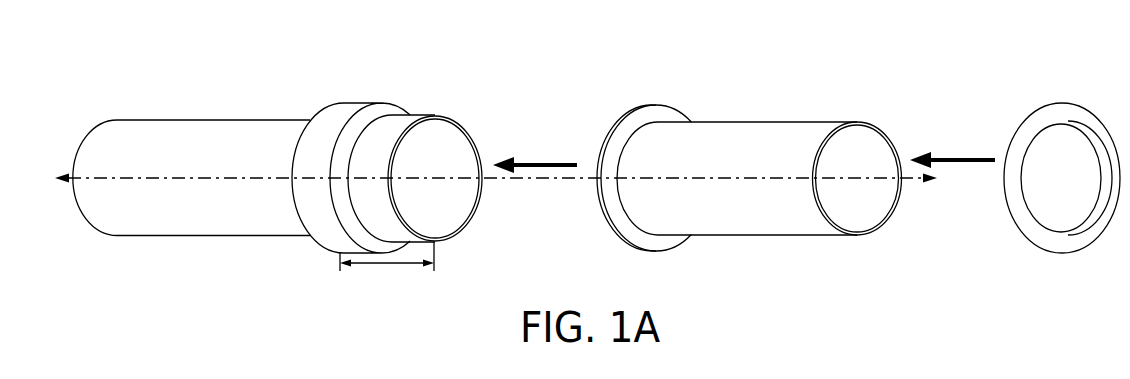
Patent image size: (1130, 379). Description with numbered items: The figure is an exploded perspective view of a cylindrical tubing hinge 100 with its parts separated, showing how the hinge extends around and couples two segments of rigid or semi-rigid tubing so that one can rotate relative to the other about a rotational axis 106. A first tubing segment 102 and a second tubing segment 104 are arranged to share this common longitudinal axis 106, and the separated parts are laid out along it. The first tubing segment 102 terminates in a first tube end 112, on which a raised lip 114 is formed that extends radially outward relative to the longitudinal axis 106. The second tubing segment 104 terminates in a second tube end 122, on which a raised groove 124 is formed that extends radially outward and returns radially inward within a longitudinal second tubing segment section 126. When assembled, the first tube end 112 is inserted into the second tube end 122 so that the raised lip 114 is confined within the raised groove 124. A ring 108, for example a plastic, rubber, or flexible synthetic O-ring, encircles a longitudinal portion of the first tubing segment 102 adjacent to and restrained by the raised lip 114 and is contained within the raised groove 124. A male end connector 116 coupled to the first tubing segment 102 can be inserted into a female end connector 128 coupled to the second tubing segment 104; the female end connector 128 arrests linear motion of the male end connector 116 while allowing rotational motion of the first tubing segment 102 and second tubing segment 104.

The cylindrical tubing hinge 100 is at (288, 65).
The first tubing segment 102 is at (822, 237).
The second tubing segment 104 is at (142, 237).
The rotational axis 106 is at (523, 180).
The ring 108 is at (1028, 117).
The first tube end 112 is at (662, 120).
The raised lip 114 is at (626, 181).
The male end connector 116 is at (620, 238).
The second tube end 122 is at (407, 122).
The raised groove 124 is at (342, 113).
The longitudinal second tubing segment section 126 is at (387, 268).
The female end connector 128 is at (457, 125).